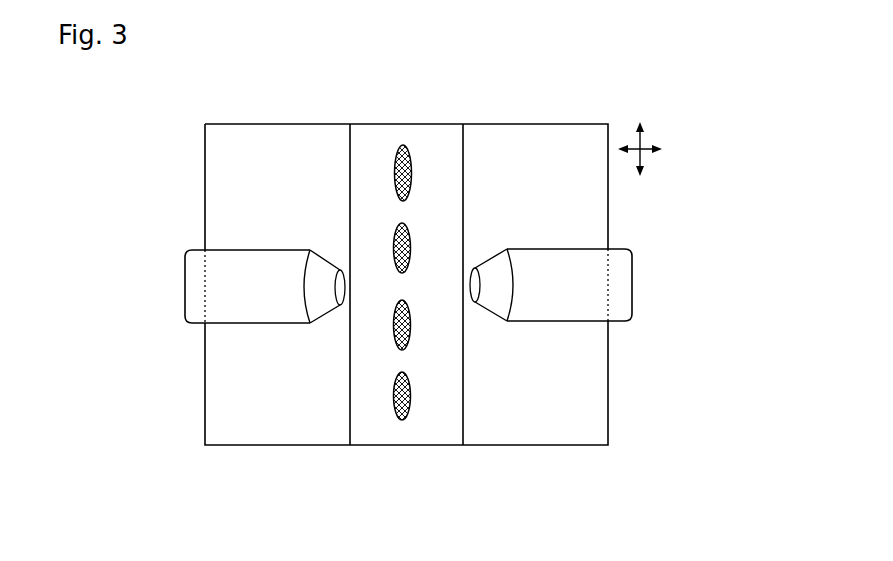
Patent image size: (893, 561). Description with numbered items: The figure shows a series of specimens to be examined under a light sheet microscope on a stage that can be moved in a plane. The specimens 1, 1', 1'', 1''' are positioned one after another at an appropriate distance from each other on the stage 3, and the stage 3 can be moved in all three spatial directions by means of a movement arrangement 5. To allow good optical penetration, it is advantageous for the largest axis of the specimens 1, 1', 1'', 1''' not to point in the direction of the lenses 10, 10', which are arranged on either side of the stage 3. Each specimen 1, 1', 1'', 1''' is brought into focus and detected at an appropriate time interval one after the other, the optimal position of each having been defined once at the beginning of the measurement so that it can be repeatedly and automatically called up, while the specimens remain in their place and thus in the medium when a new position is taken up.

The specimen 1 is at (419, 122).
The specimen 1' is at (440, 158).
The specimen 1'' is at (455, 408).
The specimen 1''' is at (428, 444).
The stage 3 is at (595, 425).
The movement arrangement 5 is at (646, 147).
The lens 10 is at (199, 298).
The lens 10' is at (606, 299).